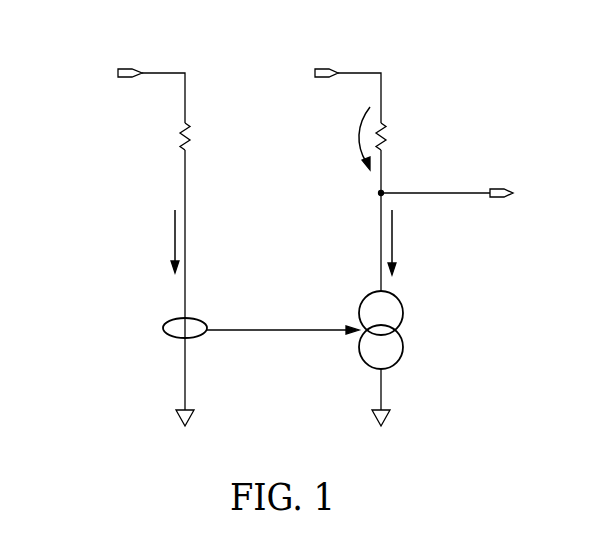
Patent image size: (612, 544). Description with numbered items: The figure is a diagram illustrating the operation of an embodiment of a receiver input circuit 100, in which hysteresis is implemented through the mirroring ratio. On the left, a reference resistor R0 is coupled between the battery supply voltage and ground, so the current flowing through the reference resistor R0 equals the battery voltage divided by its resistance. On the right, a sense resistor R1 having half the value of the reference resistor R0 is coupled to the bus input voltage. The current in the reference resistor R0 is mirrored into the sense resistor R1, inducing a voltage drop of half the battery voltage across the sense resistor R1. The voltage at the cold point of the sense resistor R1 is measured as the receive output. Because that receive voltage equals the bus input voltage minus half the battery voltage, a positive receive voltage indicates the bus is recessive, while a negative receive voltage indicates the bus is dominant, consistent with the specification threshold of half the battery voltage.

The LIN receiver input circuit 100 is at (446, 73).
The reference resistor R0 is at (147, 140).
The sense resistor R1 is at (426, 140).